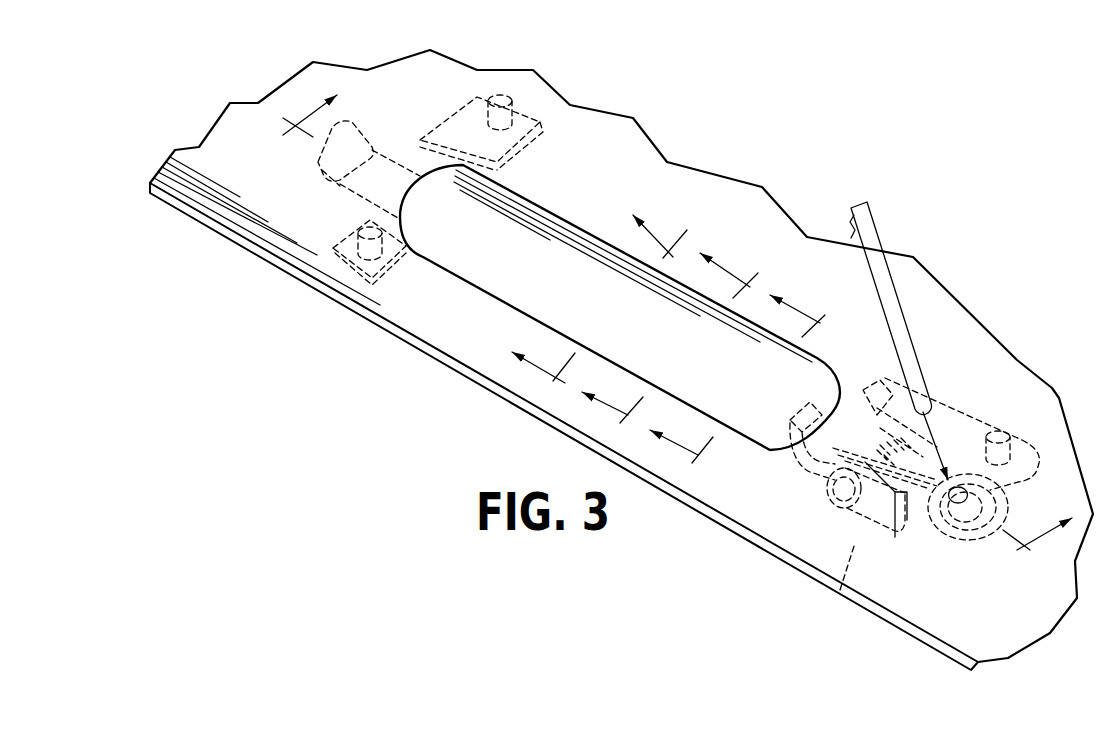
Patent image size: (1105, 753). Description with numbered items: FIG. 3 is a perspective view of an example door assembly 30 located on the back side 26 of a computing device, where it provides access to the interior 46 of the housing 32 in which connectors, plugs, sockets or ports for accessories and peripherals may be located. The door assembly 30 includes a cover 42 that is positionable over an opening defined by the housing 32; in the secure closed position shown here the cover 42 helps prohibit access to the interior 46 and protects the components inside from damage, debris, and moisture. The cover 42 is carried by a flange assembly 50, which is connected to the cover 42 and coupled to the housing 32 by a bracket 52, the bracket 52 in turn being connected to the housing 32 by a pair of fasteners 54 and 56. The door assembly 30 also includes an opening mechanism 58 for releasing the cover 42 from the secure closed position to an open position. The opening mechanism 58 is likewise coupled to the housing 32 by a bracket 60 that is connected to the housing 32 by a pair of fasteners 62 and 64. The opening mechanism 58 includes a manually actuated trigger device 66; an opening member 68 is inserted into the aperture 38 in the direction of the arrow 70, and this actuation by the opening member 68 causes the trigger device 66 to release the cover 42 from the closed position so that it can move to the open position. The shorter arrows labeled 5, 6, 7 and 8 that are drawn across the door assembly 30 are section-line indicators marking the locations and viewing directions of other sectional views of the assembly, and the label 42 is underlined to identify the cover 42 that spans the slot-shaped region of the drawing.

The section line 5- 5 is at (668, 335).
The section line 6- 6 is at (612, 312).
The section line 7- 7 is at (681, 352).
The section line 8- 8 is at (747, 390).
The back side 26 is at (225, 150).
The door assembly 30 is at (728, 147).
The housing 32 is at (480, 387).
The aperture 38 is at (960, 500).
The cover 42 is at (629, 313).
The interior 46 is at (838, 597).
The flange assembly 50 is at (393, 155).
The bracket 52 is at (528, 147).
The fastener 54 is at (507, 95).
The fastener 56 is at (347, 232).
The opening mechanism 58 is at (953, 547).
The bracket 60 is at (857, 520).
The fastener 62 is at (878, 370).
The fastener 64 is at (1006, 432).
The manually actuated trigger device 66 is at (908, 525).
The opening member 68 is at (866, 232).
The arrow 70 is at (935, 432).